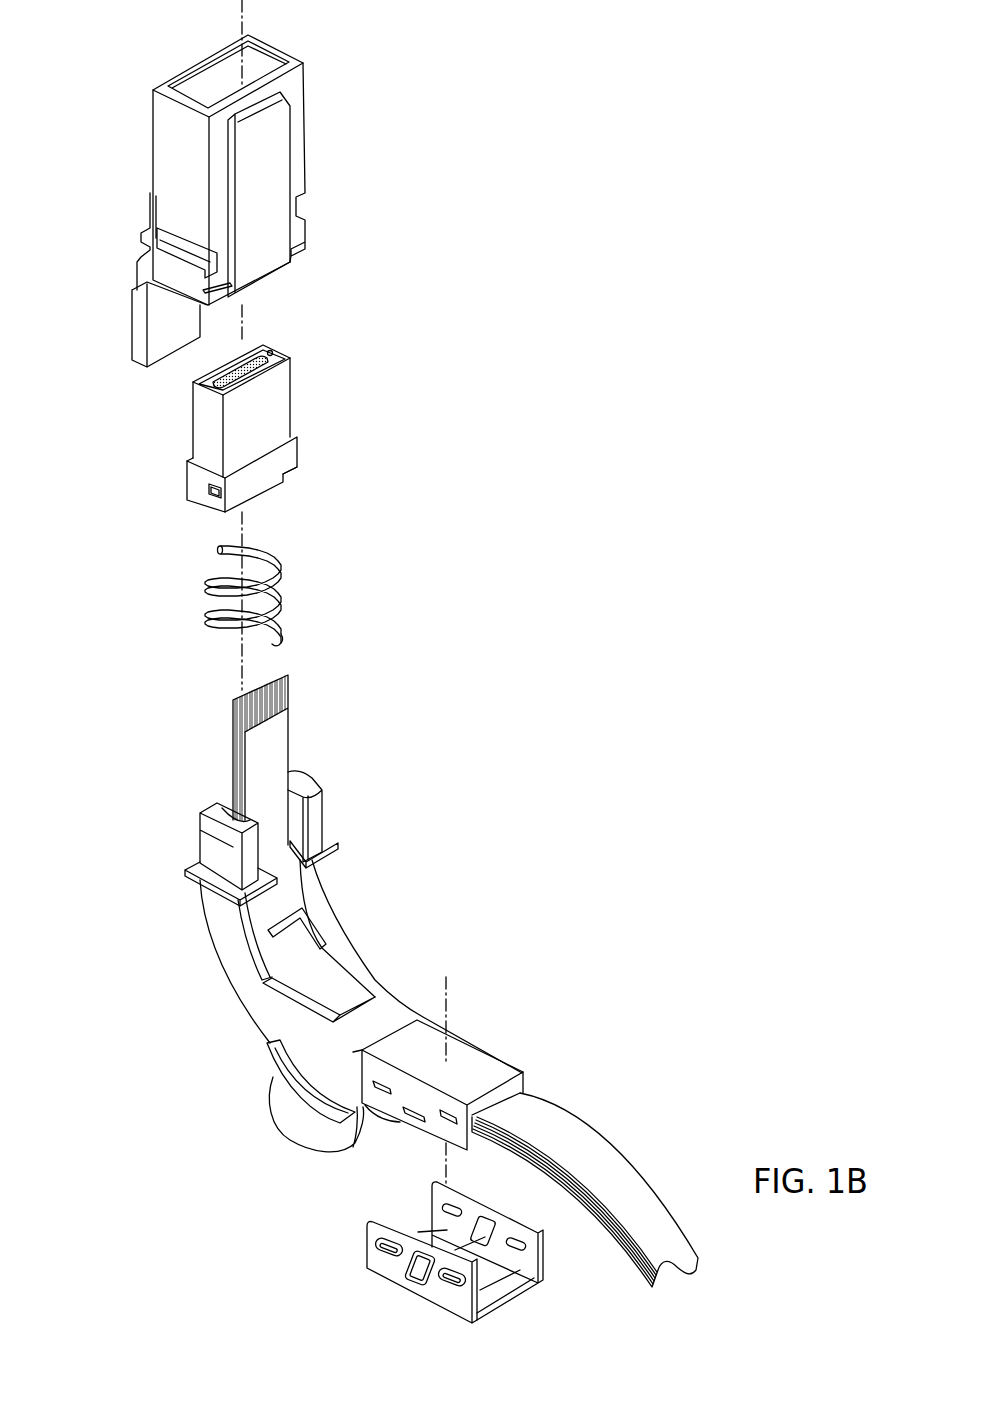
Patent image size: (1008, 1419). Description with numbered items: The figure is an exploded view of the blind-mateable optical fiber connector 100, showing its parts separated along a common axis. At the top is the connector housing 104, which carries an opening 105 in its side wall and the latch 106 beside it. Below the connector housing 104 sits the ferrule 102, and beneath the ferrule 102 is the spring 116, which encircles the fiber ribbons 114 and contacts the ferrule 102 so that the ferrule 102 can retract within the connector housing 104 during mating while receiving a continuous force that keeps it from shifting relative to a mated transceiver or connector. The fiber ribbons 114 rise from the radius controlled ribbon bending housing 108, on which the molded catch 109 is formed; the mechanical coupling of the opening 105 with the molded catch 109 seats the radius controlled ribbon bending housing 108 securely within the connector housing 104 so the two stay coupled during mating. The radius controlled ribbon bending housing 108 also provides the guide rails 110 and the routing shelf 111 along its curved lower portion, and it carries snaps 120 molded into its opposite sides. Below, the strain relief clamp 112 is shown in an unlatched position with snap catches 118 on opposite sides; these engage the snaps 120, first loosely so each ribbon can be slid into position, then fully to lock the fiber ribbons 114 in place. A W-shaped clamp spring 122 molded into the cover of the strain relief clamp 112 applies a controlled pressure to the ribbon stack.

The optical fiber connector 100 is at (466, 113).
The ferrule 102 is at (192, 424).
The connector housing 104 is at (305, 118).
The opening 105 is at (160, 243).
The latch 106 is at (132, 317).
The radius controlled ribbon bending housing 108 is at (228, 980).
The molded catch 109 is at (207, 830).
The guide rails 110 is at (303, 1137).
The routing shelf 111 is at (267, 1067).
The strain relief clamp 112 is at (407, 1293).
The fiber ribbons 114 is at (580, 1130).
The spring 116 is at (288, 575).
The snap catches 118 is at (403, 1265).
The snaps 120 is at (413, 1123).
The clamp spring 122 is at (493, 1280).